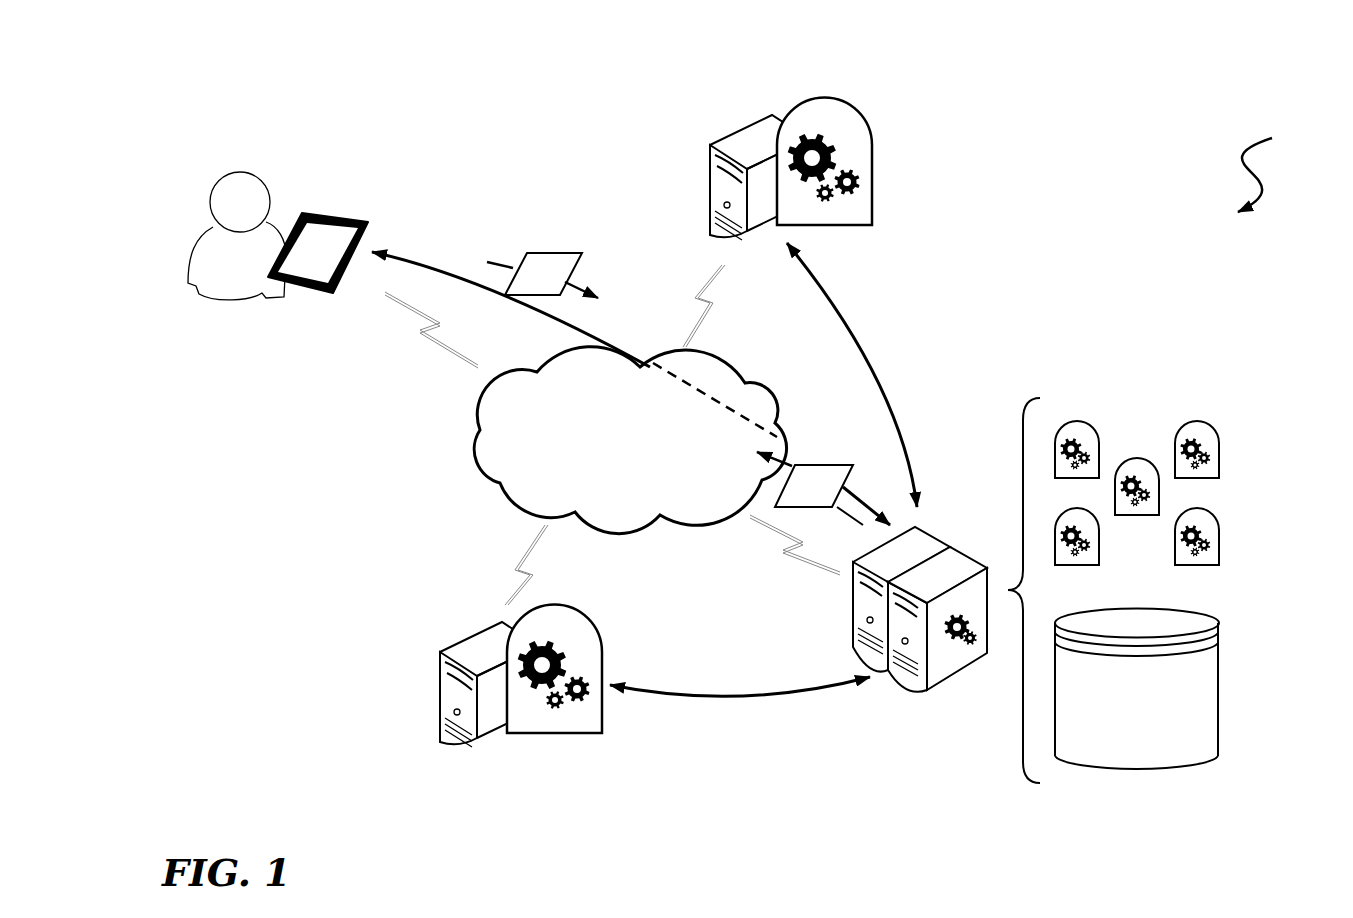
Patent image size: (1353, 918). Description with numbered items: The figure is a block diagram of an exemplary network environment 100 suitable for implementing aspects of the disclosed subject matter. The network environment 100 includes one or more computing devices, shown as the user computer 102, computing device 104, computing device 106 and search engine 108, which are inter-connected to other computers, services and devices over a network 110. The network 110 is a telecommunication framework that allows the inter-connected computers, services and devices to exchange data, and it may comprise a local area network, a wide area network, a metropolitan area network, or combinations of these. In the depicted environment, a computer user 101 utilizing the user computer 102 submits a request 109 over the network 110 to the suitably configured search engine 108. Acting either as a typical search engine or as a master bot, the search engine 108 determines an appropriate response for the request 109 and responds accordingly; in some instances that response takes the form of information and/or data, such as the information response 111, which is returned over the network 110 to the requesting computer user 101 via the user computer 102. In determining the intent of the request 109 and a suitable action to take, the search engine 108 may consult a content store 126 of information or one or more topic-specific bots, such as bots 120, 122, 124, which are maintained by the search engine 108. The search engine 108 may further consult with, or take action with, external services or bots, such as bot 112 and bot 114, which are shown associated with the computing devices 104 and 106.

The network environment 100 is at (1278, 162).
The computer user 101 is at (203, 297).
The user computer 102 is at (308, 284).
The computing device 104 is at (477, 762).
The computing device 106 is at (747, 252).
The search engine 108 is at (927, 690).
The request 109 is at (567, 252).
The network 110 is at (668, 492).
The information response 111 is at (825, 462).
The bot 112 is at (577, 735).
The bot 114 is at (857, 108).
The bot 120 is at (1220, 453).
The bot 122 is at (1220, 540).
The bot 124 is at (1133, 458).
The content store 126 is at (1218, 688).